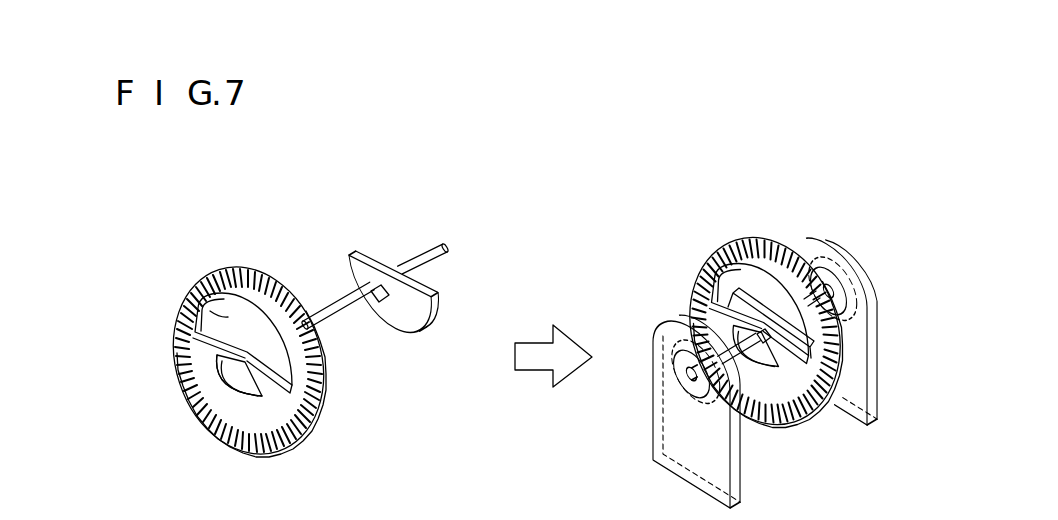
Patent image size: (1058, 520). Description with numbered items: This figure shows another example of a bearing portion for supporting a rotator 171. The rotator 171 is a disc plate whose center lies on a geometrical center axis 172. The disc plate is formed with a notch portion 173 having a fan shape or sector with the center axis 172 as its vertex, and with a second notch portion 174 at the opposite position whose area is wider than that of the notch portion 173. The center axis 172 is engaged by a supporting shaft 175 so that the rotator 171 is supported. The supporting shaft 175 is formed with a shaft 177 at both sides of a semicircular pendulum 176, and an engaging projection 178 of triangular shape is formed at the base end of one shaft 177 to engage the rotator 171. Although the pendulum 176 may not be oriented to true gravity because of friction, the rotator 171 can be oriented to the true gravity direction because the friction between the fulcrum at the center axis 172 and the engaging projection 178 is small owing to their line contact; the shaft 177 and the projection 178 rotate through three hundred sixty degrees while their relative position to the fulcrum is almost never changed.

The rotator 171 is at (173, 327).
The center axis 172 is at (243, 365).
The notch portion 173 is at (224, 378).
The notch portion 174 is at (197, 290).
The supporting shaft 175 is at (460, 267).
The pendulum 176 is at (400, 322).
The shaft 177 is at (330, 310).
The engaging projection 178 is at (376, 287).